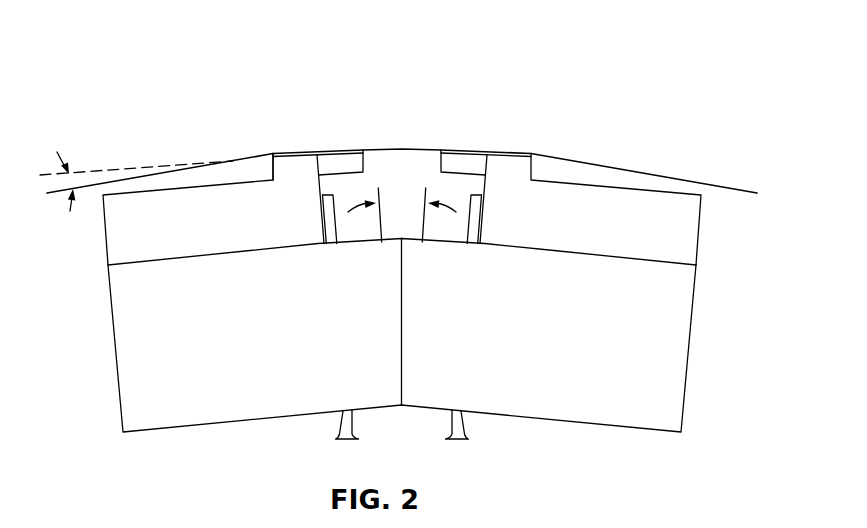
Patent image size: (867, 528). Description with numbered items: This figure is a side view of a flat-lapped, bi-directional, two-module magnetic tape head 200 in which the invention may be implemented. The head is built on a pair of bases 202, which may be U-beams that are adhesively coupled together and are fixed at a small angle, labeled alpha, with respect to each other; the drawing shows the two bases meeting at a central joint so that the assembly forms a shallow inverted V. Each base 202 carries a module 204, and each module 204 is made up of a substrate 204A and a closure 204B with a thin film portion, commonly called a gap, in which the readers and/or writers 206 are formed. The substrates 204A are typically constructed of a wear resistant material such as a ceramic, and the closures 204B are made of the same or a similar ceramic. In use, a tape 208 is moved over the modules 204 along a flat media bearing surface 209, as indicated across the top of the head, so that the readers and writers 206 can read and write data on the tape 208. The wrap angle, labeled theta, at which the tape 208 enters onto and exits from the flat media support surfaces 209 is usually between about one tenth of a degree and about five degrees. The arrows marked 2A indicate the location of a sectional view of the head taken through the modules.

The magnetic tape head 200 is at (158, 120).
The base 202 is at (113, 326).
The module 204 is at (106, 234).
The substrate 204A is at (162, 213).
The closure 204B is at (445, 167).
The readers and/or writers 206 is at (318, 149).
The tape 208 is at (621, 172).
The media bearing surface 209 is at (277, 153).
The section view indicator 2A is at (291, 118).